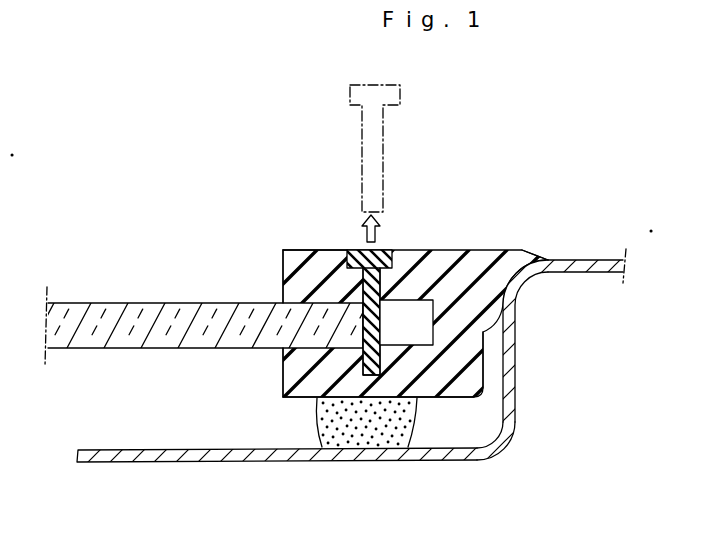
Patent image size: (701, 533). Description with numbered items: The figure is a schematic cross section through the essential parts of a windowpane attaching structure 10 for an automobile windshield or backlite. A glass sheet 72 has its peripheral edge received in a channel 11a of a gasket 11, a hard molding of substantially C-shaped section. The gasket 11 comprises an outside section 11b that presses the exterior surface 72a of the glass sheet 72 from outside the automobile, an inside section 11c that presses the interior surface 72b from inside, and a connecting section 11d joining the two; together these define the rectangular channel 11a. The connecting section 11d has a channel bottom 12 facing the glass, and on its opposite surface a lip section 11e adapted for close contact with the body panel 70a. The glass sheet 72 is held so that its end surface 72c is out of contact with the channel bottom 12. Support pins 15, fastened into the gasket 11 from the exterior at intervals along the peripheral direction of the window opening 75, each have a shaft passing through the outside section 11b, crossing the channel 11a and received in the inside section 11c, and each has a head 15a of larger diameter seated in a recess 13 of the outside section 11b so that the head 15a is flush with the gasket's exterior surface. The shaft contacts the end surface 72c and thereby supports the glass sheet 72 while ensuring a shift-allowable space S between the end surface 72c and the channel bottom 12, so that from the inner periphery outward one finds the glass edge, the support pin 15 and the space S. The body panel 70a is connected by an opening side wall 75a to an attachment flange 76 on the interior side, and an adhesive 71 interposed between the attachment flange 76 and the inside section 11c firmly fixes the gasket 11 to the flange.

The windowpane attaching structure 10 is at (194, 189).
The gasket 11 is at (290, 224).
The channel 11a is at (300, 312).
The outside section 11b is at (315, 248).
The inside section 11c is at (300, 389).
The connecting section 11d is at (483, 332).
The lip section 11e is at (522, 250).
The channel bottom 12 is at (433, 316).
The recess 13 is at (354, 248).
The support pin 15 is at (394, 119).
The head 15a is at (378, 248).
The body panel 70a is at (592, 258).
The adhesive 71 is at (380, 423).
The glass sheet 72 is at (107, 291).
The exterior surface 72a is at (172, 302).
The interior surface 72b is at (147, 350).
The end surface 72c is at (362, 348).
The window opening 75 is at (485, 407).
The opening side wall 75a is at (517, 378).
The attachment flange 76 is at (201, 456).
The space S is at (415, 340).